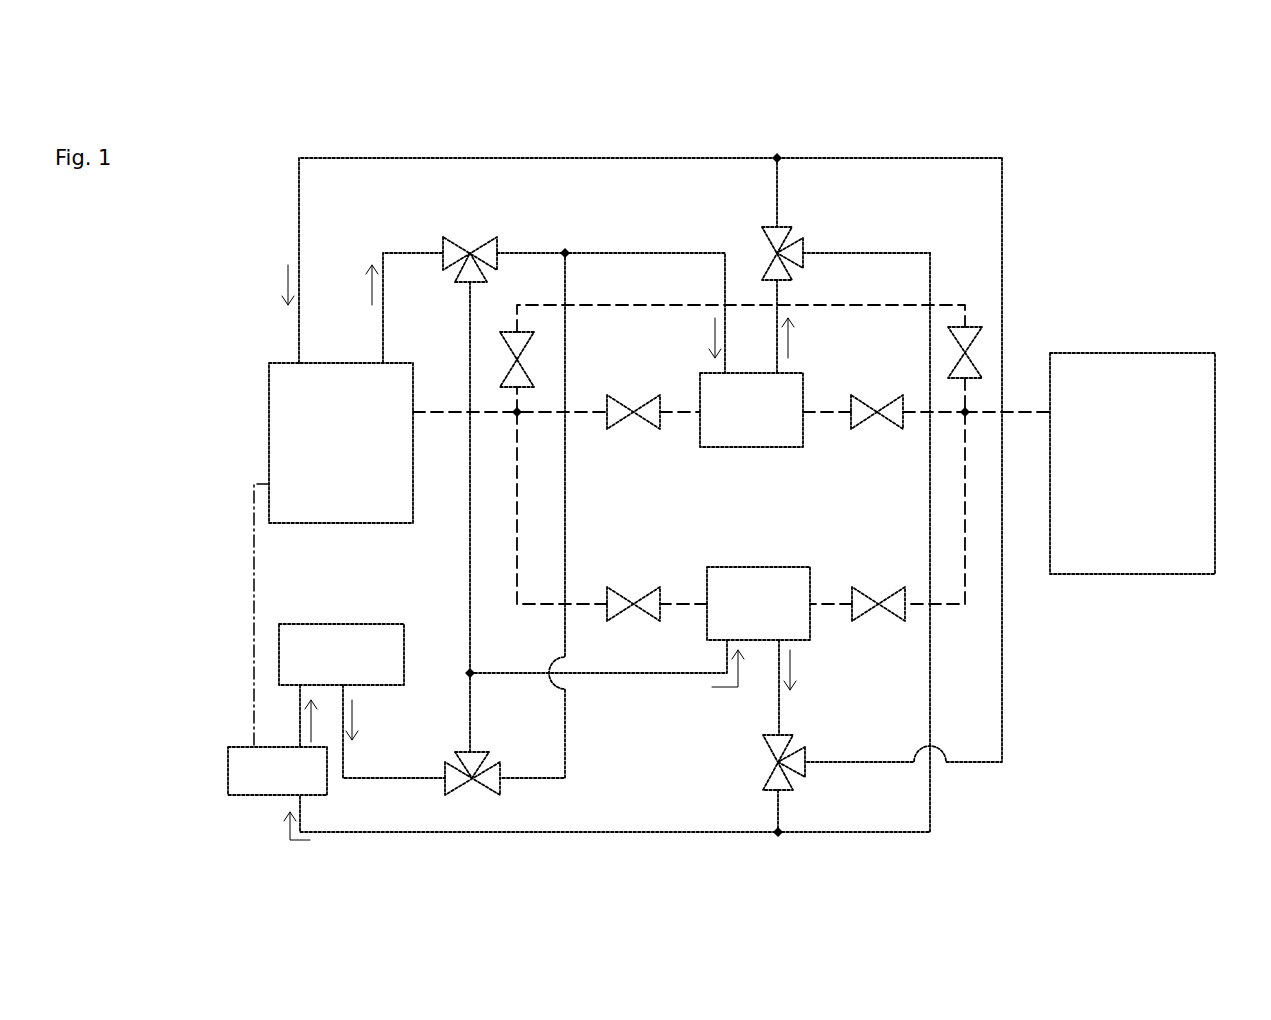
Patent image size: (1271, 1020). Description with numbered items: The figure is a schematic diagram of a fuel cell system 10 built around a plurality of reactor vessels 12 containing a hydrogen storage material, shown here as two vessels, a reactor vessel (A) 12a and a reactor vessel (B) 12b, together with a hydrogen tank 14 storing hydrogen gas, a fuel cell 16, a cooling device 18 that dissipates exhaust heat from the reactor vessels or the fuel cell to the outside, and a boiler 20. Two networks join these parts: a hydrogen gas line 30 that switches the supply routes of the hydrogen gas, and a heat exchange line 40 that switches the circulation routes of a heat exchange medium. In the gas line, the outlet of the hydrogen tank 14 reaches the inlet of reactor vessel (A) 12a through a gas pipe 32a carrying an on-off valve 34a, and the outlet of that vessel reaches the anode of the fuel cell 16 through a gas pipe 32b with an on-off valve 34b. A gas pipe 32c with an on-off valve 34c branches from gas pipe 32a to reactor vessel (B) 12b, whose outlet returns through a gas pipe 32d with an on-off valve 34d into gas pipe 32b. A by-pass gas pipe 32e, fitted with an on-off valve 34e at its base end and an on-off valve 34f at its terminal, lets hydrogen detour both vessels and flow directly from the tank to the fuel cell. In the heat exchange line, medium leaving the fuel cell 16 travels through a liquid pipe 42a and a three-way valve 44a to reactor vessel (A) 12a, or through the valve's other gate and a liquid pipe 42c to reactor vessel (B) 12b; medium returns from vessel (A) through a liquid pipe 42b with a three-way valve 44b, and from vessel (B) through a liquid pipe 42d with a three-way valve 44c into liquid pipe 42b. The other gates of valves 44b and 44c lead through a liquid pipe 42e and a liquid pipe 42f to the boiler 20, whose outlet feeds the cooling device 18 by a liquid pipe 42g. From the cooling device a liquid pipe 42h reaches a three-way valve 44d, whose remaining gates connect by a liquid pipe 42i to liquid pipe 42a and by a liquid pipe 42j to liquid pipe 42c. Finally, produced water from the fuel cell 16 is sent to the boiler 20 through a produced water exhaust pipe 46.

The fuel cell system 10 is at (1240, 99).
The reactor vessels 12 is at (775, 506).
The reactor vessel (A) 12a is at (740, 448).
The reactor vessel (B) 12b is at (735, 567).
The hydrogen tank 14 is at (1192, 576).
The fuel cell 16 is at (277, 362).
The cooling device 18 is at (279, 643).
The boiler 20 is at (250, 797).
The hydrogen gas line 30 is at (766, 412).
The gas pipe 32a is at (1020, 410).
The gas pipe 32b is at (455, 410).
The gas pipe 32c is at (950, 606).
The gas pipe 32d is at (583, 606).
The gas pipe 32e is at (850, 305).
The on-off valve 34a is at (877, 404).
The on-off valve 34b is at (645, 420).
The on-off valve 34c is at (890, 610).
The on-off valve 34d is at (630, 600).
The on-off valve 34e is at (965, 328).
The on-off valve 34f is at (517, 332).
The heat exchange line 40 is at (647, 476).
The liquid pipe 42a is at (383, 251).
The liquid pipe 42b is at (605, 157).
The liquid pipe 42c is at (468, 545).
The liquid pipe 42d is at (1004, 752).
The liquid pipe 42e is at (944, 832).
The liquid pipe 42f is at (777, 815).
The liquid pipe 42g is at (299, 713).
The liquid pipe 42h is at (355, 780).
The liquid pipe 42i is at (552, 780).
The liquid pipe 42j is at (468, 710).
The three-way valve 44a is at (466, 250).
The three-way valve 44b is at (790, 240).
The three-way valve 44c is at (798, 788).
The three-way valve 44d is at (477, 793).
The produced water exhaust pipe 46 is at (254, 555).